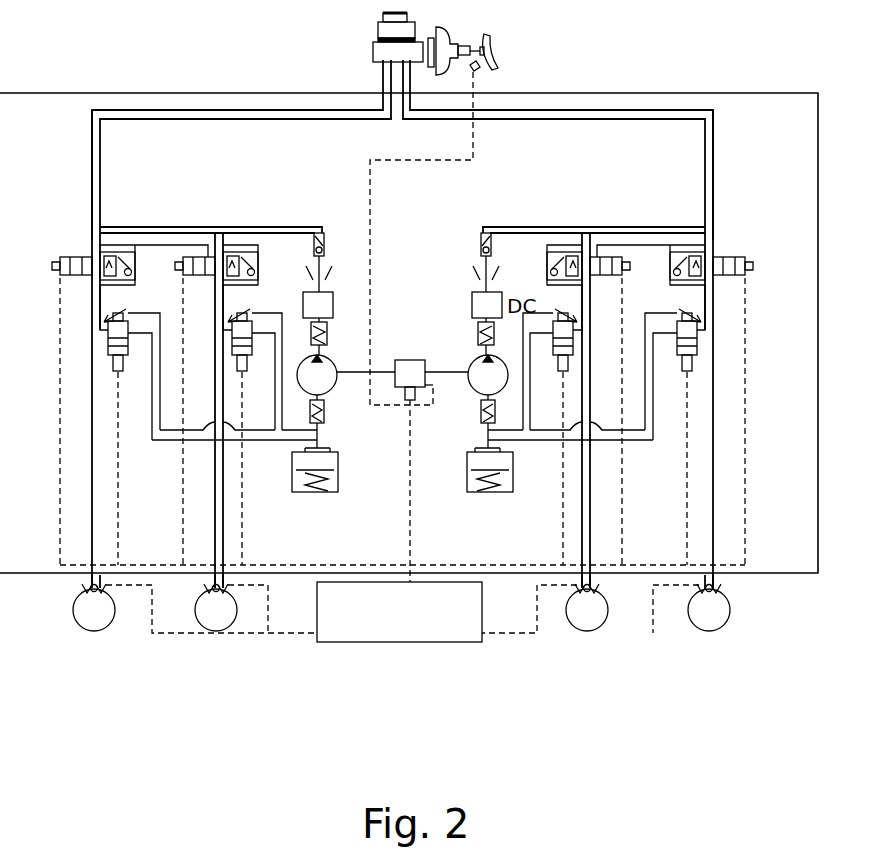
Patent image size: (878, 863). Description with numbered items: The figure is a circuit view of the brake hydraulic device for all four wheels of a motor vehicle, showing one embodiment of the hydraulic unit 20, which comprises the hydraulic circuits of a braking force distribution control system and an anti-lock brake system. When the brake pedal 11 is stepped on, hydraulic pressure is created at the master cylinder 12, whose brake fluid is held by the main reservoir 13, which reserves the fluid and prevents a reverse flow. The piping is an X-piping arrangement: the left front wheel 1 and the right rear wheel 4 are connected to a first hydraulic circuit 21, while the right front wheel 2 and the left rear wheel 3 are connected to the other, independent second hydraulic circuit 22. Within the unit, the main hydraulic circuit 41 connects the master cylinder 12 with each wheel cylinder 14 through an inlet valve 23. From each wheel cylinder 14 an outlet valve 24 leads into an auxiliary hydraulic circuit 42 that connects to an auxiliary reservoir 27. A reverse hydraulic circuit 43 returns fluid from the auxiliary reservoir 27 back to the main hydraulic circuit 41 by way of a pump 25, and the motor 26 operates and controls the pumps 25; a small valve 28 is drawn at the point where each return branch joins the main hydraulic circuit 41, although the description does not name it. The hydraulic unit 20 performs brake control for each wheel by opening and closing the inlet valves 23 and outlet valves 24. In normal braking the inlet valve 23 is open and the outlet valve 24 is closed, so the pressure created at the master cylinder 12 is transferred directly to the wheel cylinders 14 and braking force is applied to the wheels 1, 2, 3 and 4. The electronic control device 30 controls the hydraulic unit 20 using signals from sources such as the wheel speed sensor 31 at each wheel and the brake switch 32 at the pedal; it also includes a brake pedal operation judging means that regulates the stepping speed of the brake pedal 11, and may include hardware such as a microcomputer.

The left front wheel 1 is at (108, 626).
The right front wheel 2 is at (728, 625).
The left rear wheel 3 is at (600, 626).
The right rear wheel 4 is at (230, 626).
The brake pedal 11 is at (497, 40).
The master cylinder 12 is at (373, 57).
The main reservoir 13 is at (379, 32).
The wheel cylinder 14 is at (722, 590).
The hydraulic unit 20 is at (770, 93).
The first hydraulic circuit 21 is at (104, 110).
The second hydraulic circuit 22 is at (556, 113).
The inlet valve 23 is at (732, 258).
The outlet valve 24 is at (698, 352).
The pump 25 is at (472, 365).
The motor 26 is at (410, 360).
The auxiliary reservoir 27 is at (492, 494).
The check valve 28 is at (480, 240).
The electronic control device 30 is at (358, 645).
The wheel speed sensor 31 is at (700, 584).
The brake switch 32 is at (490, 70).
The main hydraulic circuit 41 is at (833, 150).
The auxiliary hydraulic circuit 42 is at (653, 433).
The reverse hydraulic circuit 43 is at (495, 270).